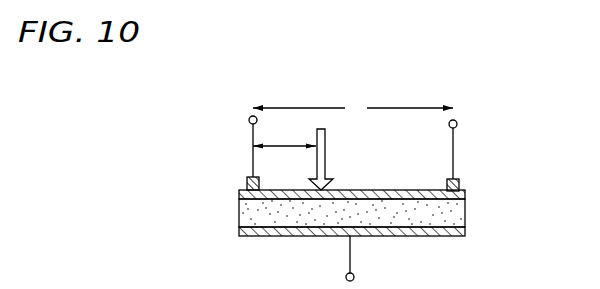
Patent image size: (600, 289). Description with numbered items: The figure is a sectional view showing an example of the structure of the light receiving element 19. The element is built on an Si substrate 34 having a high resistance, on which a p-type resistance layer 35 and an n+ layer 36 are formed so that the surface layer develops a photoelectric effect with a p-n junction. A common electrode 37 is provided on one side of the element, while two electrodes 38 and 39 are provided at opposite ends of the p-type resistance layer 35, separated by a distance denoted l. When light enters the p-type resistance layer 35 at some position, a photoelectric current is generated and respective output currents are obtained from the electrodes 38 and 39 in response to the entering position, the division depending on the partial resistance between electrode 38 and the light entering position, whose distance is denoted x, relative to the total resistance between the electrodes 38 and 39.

The light receiving element 19 is at (374, 191).
The Si substrate 34 is at (251, 212).
The p-type resistance layer 35 is at (238, 191).
The n+ layer 36 is at (238, 231).
The common electrode 37 is at (352, 258).
The electrode 38 is at (247, 176).
The electrode 39 is at (460, 182).